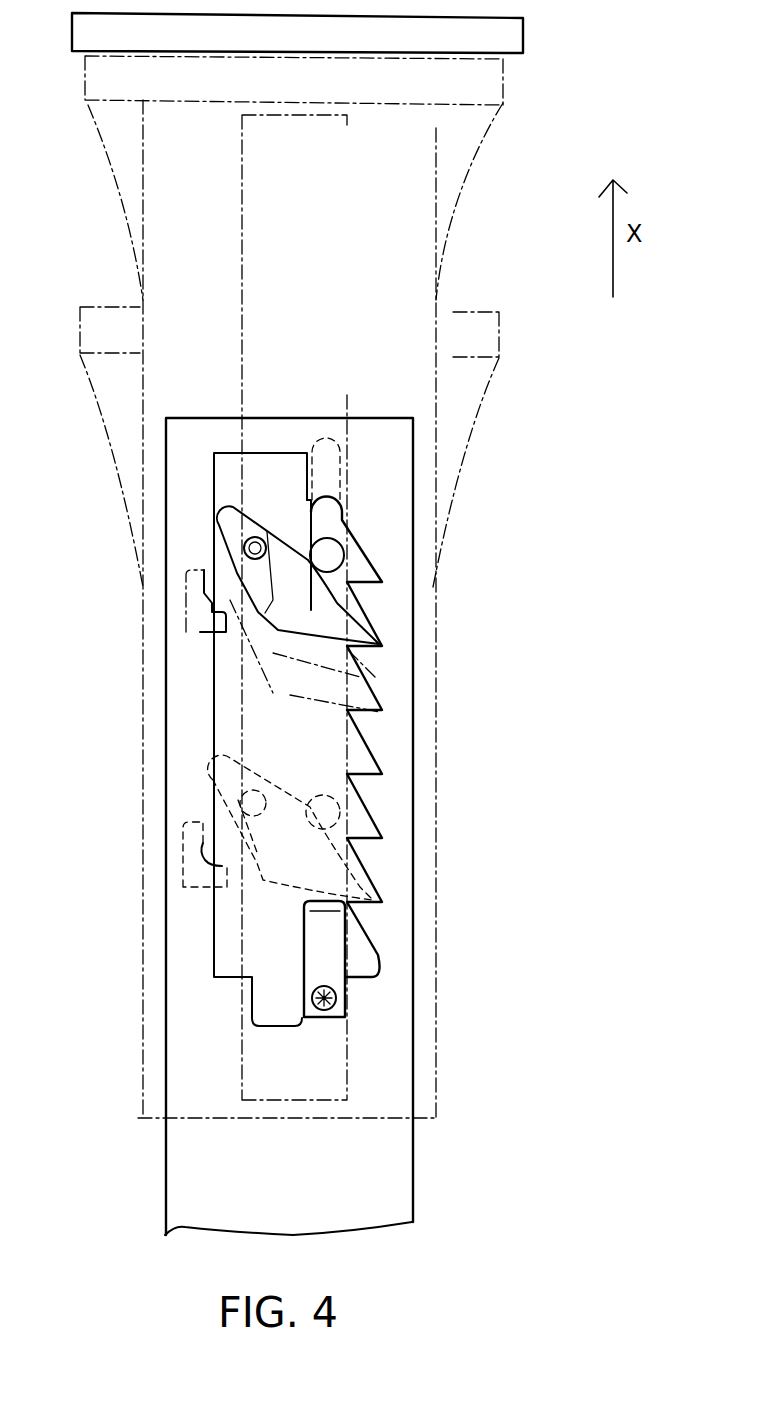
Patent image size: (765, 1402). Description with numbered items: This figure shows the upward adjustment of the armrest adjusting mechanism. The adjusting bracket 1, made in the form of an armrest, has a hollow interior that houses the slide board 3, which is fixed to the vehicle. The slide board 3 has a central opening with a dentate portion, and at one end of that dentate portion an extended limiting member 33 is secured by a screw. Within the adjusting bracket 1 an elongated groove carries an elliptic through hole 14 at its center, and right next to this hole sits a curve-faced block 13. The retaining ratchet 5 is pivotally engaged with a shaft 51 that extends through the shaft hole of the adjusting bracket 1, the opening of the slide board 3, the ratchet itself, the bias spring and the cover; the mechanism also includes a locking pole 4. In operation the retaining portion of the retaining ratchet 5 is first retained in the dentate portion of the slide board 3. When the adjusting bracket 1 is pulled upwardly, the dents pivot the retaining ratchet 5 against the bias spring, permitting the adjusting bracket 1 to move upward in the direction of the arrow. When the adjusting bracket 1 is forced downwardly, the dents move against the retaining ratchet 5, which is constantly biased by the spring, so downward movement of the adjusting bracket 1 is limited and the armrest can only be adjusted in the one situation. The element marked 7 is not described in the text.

The adjusting bracket 1 is at (483, 378).
The slide board 3 is at (397, 942).
The locking pole 4 is at (336, 556).
The retaining ratchet 5 is at (220, 570).
The shaft 51 is at (209, 603).
The handle bar 7 is at (521, 33).
The curve-faced block 13 is at (183, 624).
The elliptic through hole 14 is at (343, 465).
The extended limiting member 33 is at (317, 933).